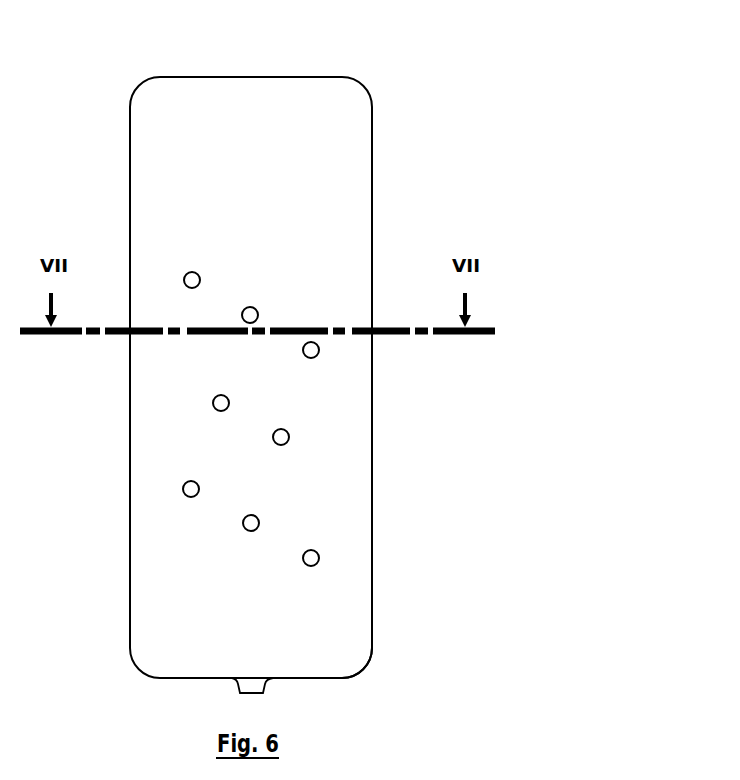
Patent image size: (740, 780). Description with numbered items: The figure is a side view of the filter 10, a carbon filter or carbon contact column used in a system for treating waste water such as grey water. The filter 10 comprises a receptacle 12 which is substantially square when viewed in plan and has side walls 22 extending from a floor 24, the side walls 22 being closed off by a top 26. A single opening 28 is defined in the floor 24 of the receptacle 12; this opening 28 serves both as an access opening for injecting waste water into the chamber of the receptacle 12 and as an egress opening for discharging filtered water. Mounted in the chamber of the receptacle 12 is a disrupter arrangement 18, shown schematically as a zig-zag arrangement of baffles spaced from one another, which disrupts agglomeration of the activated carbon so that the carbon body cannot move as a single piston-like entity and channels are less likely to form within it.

The filter 10 is at (362, 368).
The receptacle 12 is at (371, 476).
The disrupter arrangement 18 is at (326, 373).
The side walls 22 is at (372, 600).
The floor 24 is at (342, 678).
The top 26 is at (280, 77).
The opening 28 is at (263, 694).